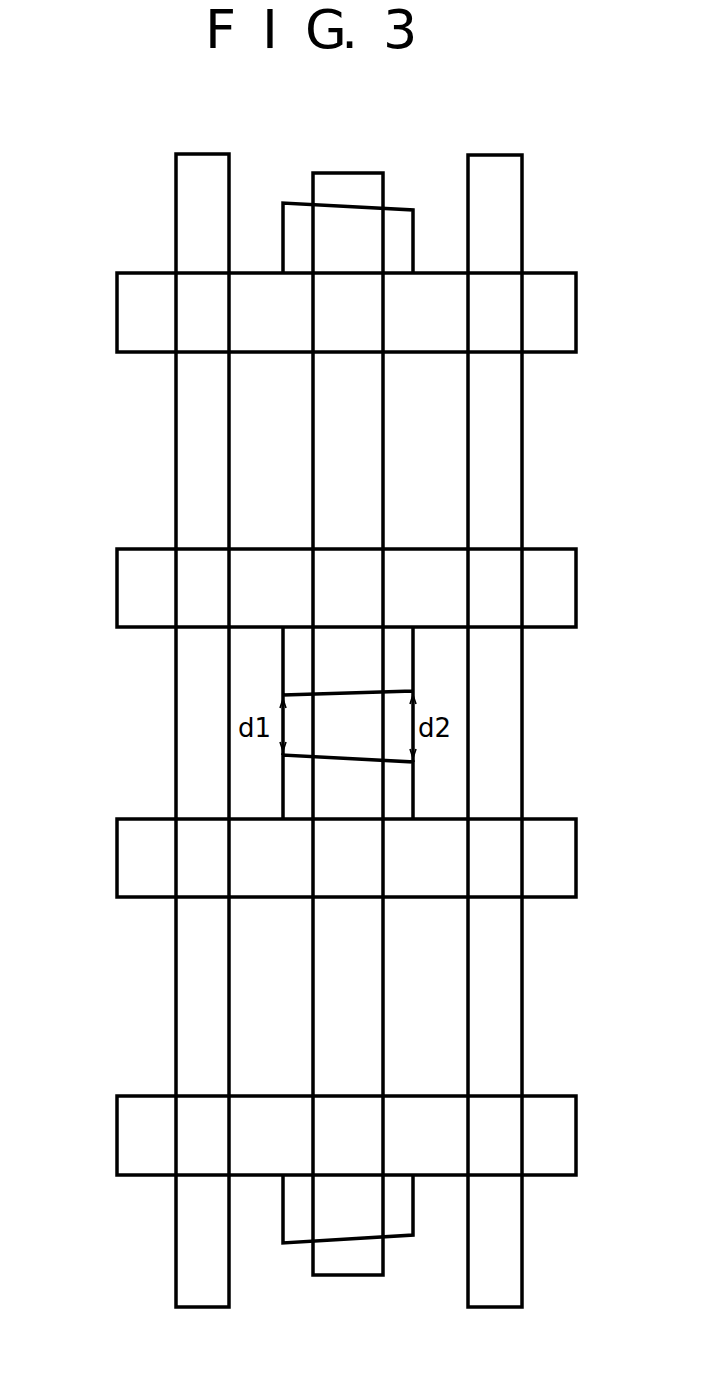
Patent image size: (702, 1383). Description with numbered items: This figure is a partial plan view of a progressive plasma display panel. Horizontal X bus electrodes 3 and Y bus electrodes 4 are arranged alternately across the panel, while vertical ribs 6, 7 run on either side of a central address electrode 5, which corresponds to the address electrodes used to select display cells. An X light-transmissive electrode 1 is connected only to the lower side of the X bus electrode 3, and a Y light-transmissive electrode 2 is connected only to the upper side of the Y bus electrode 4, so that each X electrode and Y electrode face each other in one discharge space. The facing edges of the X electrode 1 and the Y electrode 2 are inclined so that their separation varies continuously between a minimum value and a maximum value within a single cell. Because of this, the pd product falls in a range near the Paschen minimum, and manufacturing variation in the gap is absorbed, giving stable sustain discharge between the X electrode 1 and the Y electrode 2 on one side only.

The X light-transmissive electrode 1 is at (300, 660).
The Y light-transmissive electrode 2 is at (297, 243).
The X bus electrode 3 is at (124, 591).
The Y bus electrode 4 is at (124, 316).
The address electrode 5 is at (335, 464).
The rib 6 is at (188, 173).
The rib 7 is at (480, 175).